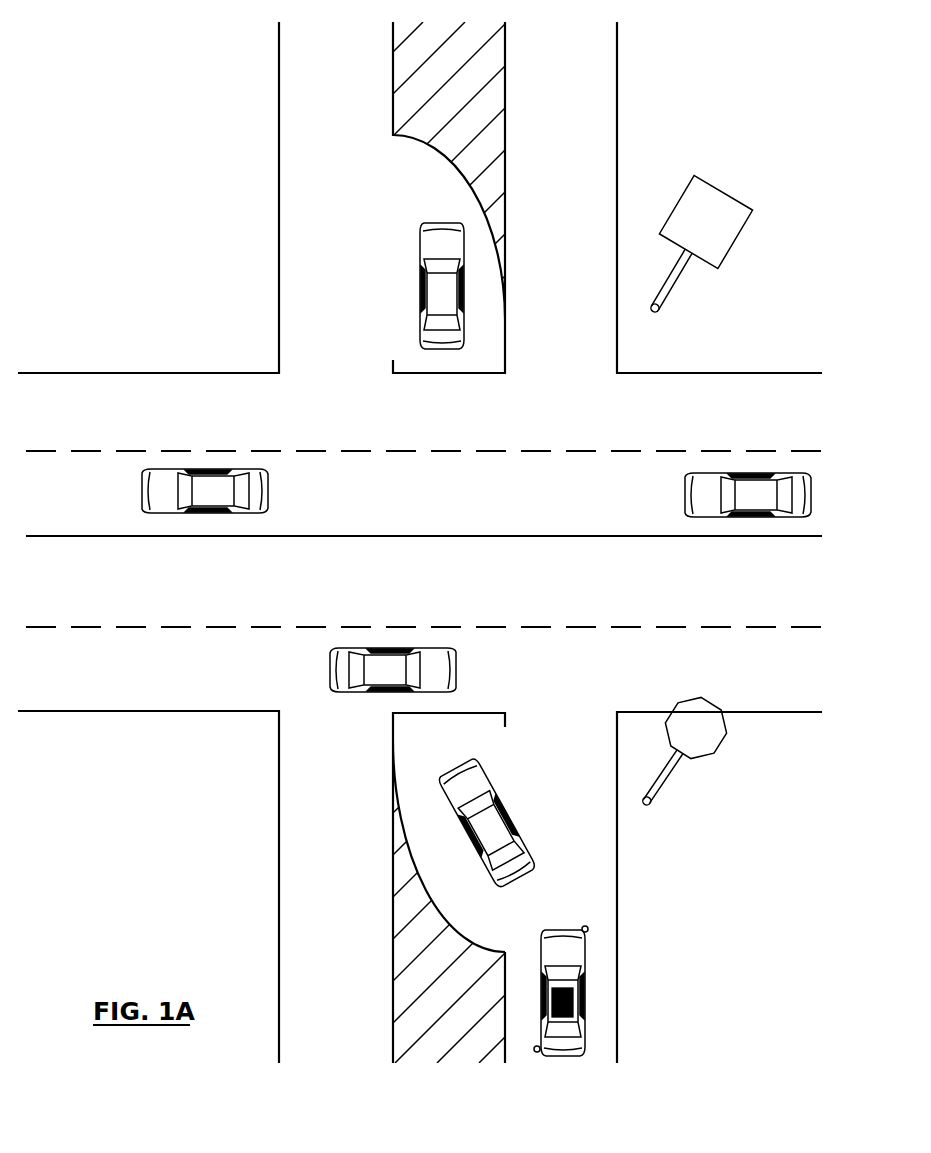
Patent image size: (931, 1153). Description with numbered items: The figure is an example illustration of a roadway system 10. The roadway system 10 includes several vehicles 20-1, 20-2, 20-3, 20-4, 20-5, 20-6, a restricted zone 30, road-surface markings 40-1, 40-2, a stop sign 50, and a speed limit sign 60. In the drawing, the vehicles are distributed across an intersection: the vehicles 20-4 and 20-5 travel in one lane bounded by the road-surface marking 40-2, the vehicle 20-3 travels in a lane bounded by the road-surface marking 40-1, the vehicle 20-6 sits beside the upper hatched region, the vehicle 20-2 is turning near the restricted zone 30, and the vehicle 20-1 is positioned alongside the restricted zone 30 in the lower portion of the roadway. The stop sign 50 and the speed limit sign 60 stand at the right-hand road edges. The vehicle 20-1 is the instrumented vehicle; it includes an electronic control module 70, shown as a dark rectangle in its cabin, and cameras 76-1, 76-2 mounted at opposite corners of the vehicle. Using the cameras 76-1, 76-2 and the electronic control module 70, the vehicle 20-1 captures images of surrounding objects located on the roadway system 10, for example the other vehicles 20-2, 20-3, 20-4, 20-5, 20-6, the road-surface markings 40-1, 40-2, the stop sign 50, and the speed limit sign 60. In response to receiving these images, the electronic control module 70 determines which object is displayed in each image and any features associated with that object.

The roadway system 10 is at (136, 77).
The vehicle 20-1 is at (540, 951).
The vehicle 20-2 is at (462, 766).
The vehicle 20-3 is at (329, 668).
The vehicle 20-4 is at (686, 500).
The vehicle 20-5 is at (141, 493).
The vehicle 20-6 is at (418, 225).
The restricted zone 30 is at (428, 975).
The road-surface marking 40-1 is at (533, 627).
The road-surface marking 40-2 is at (440, 451).
The stop sign 50 is at (711, 704).
The speed limit sign 60 is at (724, 194).
The electronic control module 70 is at (574, 1004).
The camera 76-1 is at (585, 926).
The camera 76-2 is at (537, 1052).